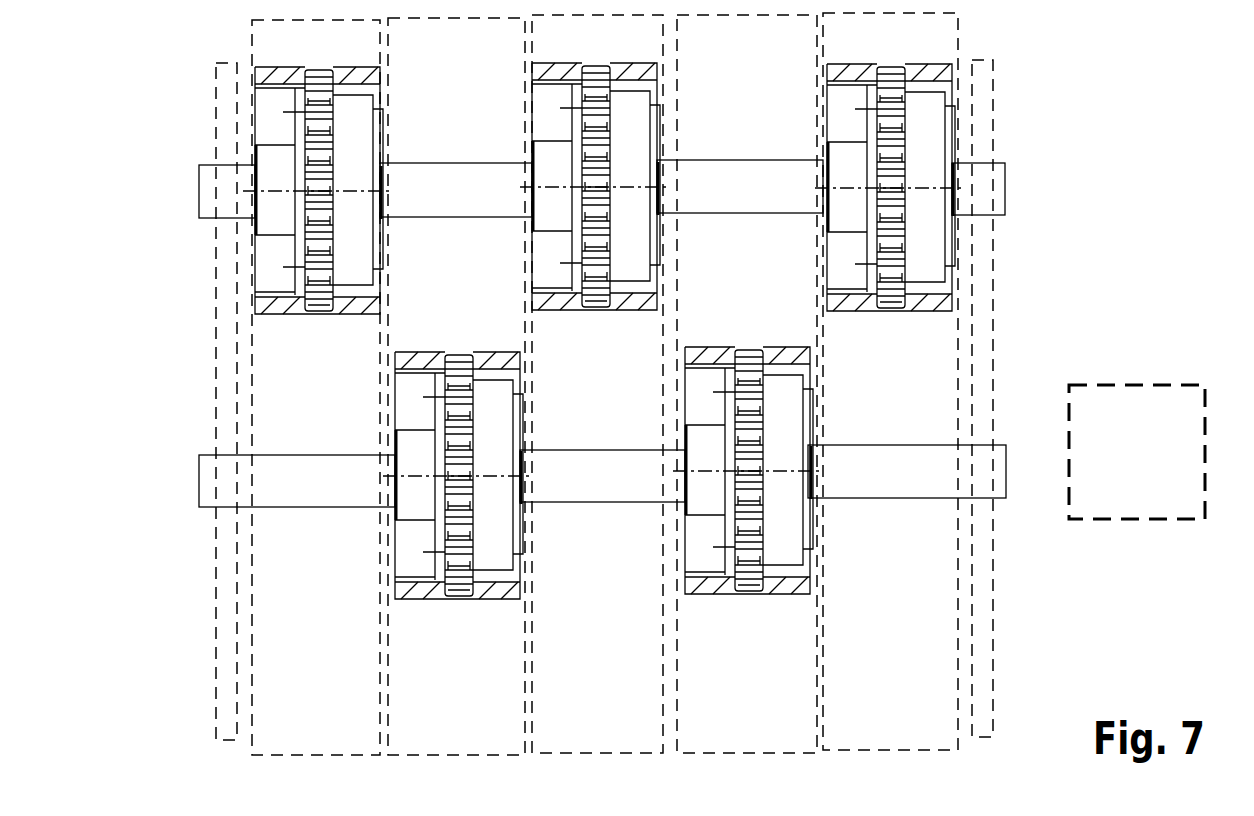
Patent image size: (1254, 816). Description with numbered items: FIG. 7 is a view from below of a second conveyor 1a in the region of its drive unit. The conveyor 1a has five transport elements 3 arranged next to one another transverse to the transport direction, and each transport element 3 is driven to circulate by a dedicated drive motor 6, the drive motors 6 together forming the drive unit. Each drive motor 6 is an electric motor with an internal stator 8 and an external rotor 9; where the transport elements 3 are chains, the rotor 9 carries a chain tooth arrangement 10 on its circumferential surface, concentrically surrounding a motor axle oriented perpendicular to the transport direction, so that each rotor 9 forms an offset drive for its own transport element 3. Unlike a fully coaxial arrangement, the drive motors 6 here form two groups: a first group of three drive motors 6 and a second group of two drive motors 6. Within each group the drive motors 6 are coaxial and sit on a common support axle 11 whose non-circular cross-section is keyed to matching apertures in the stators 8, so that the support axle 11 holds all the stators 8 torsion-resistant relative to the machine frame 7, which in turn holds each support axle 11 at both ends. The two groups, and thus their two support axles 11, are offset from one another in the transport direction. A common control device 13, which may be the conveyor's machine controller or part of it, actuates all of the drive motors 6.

The second conveyor 1a is at (674, 384).
The transport element 3 is at (418, 693).
The drive motor 6 is at (265, 291).
The machine frame 7 is at (215, 292).
The internal stator 8 is at (848, 165).
The external rotor 9 is at (930, 255).
The chain tooth arrangement 10 is at (748, 498).
The support axle 11 is at (281, 484).
The common control device 13 is at (1137, 452).